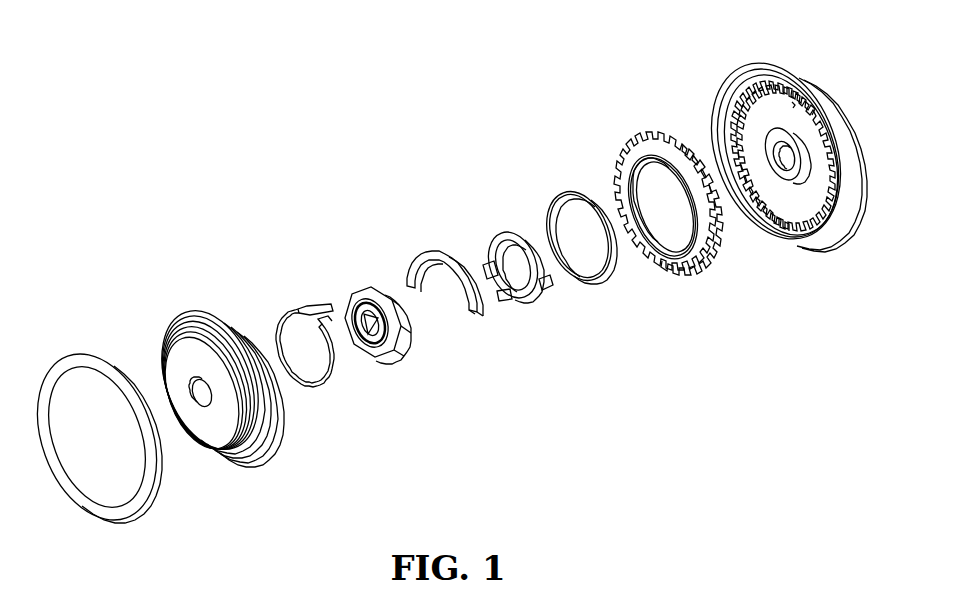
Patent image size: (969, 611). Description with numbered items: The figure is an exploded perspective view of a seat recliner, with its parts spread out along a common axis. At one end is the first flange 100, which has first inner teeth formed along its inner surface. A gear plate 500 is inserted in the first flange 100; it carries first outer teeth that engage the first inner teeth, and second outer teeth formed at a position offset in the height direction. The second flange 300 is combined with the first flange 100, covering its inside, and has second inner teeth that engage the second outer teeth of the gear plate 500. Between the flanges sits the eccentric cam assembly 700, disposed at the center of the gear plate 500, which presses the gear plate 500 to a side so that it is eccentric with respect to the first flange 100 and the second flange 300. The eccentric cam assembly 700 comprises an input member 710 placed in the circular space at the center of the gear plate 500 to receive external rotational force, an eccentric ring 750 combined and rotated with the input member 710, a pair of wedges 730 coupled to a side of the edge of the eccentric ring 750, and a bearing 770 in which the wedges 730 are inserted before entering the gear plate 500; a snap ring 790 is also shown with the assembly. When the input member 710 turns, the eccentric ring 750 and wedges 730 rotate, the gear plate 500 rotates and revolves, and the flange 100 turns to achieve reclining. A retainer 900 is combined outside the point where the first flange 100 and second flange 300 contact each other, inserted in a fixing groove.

The first flange 100 is at (806, 252).
The second flange 300 is at (188, 310).
The gear plate 500 is at (690, 268).
The eccentric cam assembly 700 is at (410, 170).
The input member 710 is at (371, 287).
The wedges 730 is at (433, 247).
The eccentric ring 750 is at (512, 233).
The bearing 770 is at (567, 190).
The snap ring 790 is at (310, 303).
The retainer 900 is at (63, 352).